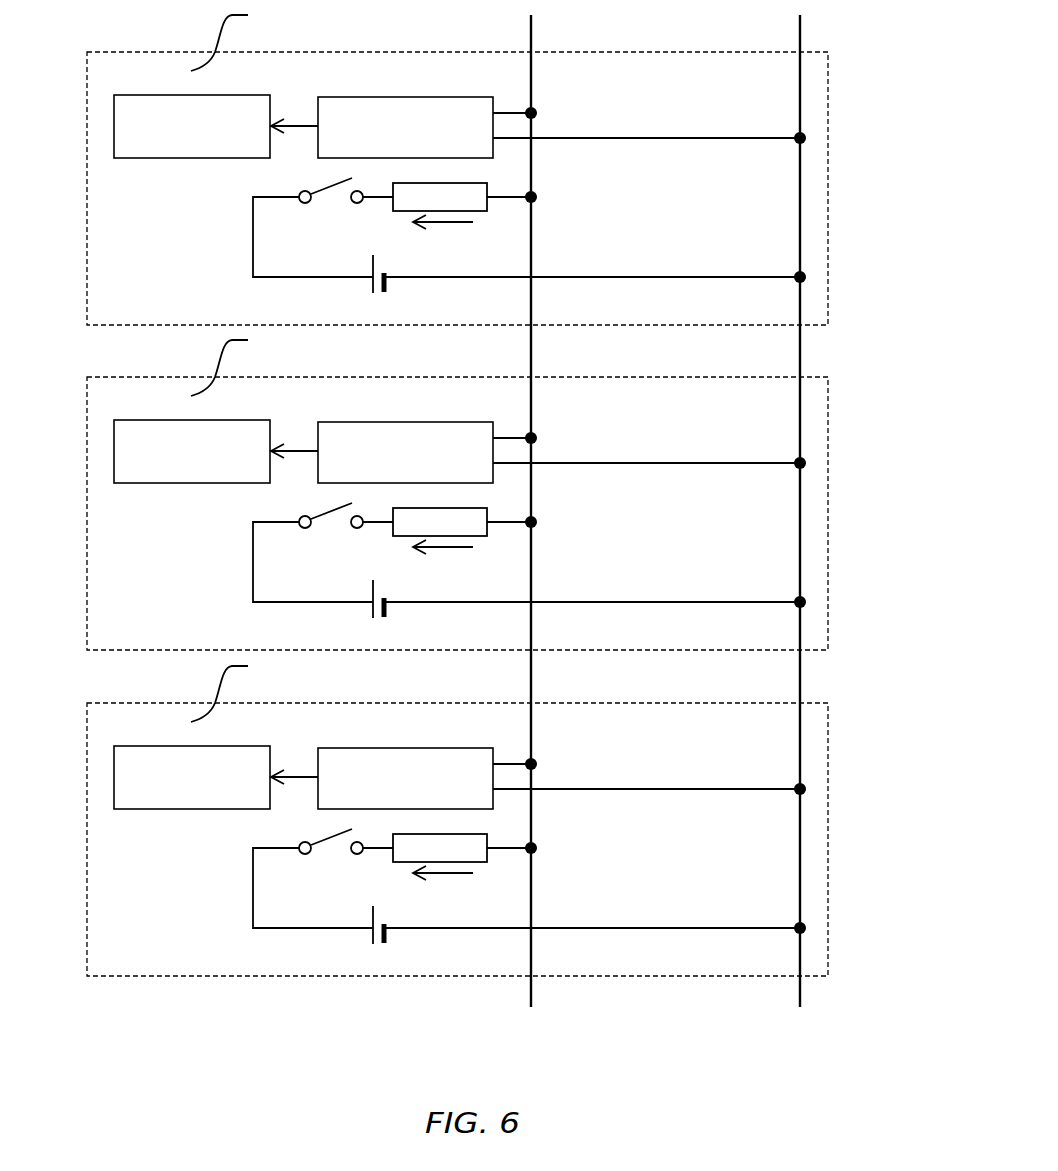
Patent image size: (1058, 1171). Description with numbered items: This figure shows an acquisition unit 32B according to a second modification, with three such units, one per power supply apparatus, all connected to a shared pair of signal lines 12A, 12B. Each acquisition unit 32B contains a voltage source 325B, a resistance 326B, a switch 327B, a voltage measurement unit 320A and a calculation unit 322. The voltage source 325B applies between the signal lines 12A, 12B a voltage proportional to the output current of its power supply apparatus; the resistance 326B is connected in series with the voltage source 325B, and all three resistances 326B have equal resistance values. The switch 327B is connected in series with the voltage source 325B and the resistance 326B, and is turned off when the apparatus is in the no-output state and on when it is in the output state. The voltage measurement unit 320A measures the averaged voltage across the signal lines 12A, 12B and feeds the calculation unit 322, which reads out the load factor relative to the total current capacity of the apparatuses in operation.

The signal line 12A is at (531, 36).
The signal line 12B is at (800, 30).
The acquisition unit 32B is at (199, 52).
The voltage measurement unit 320A is at (472, 91).
The calculation unit 322 is at (135, 160).
The resistance 326B is at (487, 183).
The switch 327B is at (310, 205).
The voltage source 325B is at (373, 294).